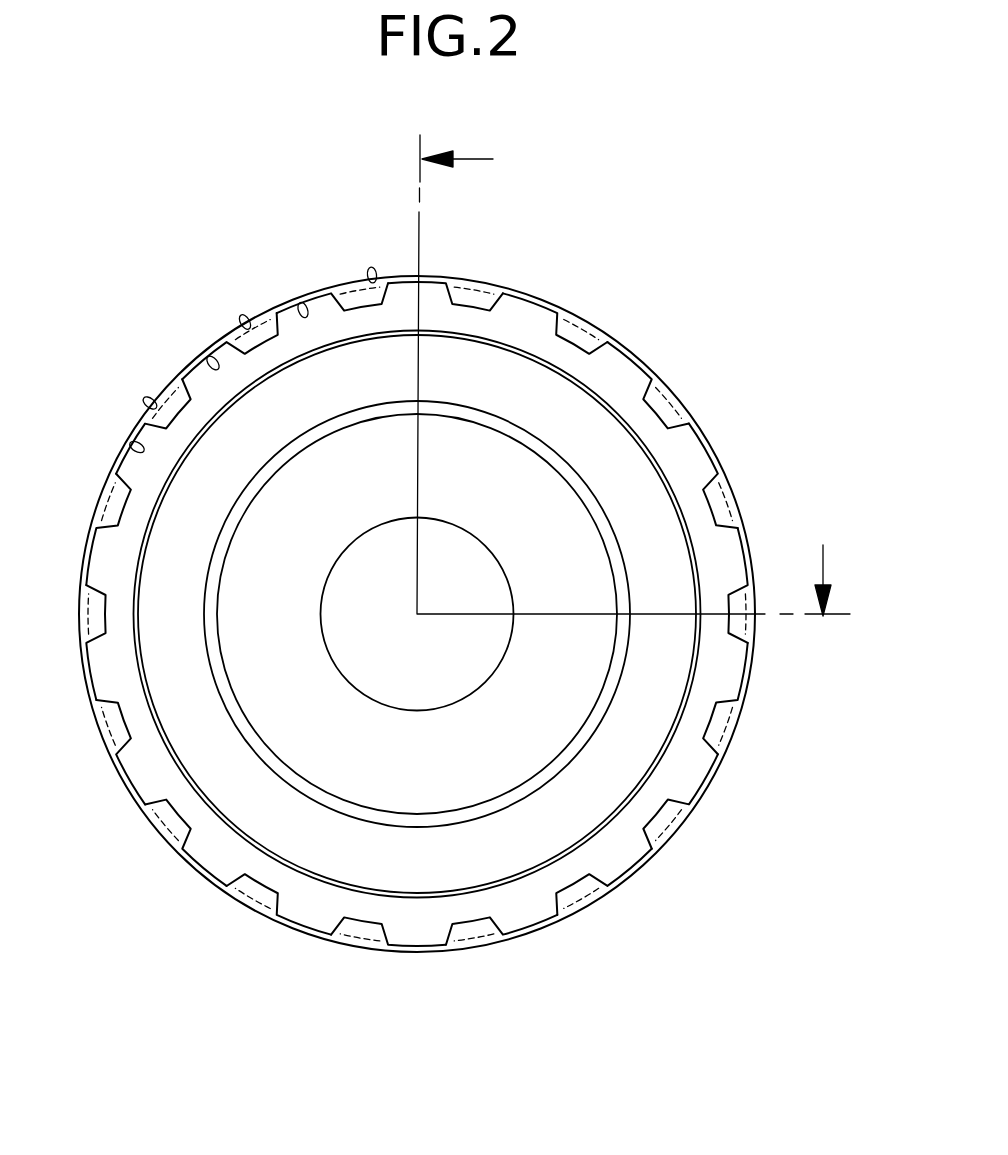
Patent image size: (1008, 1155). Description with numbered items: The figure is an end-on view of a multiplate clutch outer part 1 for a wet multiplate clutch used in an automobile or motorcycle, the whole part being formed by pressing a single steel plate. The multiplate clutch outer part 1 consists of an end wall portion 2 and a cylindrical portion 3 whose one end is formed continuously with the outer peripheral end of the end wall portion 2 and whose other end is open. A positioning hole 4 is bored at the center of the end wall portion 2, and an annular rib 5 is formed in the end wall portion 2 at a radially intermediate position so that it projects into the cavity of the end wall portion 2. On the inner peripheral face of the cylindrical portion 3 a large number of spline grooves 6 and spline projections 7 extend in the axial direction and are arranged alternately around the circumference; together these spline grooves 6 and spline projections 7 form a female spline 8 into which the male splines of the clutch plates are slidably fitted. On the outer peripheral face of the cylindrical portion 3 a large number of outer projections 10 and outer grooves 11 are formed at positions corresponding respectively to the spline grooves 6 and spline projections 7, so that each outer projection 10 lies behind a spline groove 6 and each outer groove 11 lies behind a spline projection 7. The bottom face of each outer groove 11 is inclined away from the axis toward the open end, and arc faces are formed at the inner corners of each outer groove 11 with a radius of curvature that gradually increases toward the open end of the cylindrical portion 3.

The multiplate clutch outer part 1 is at (691, 224).
The end wall portion 2 is at (634, 346).
The cylindrical portion 3 is at (490, 450).
The positioning hole 4 is at (314, 672).
The annular rib 5 is at (293, 430).
The spline grooves 6 is at (315, 298).
The spline projections 7 is at (273, 343).
The female spline 8 is at (103, 553).
The outer projections 10 is at (223, 340).
The outer grooves 11 is at (372, 278).